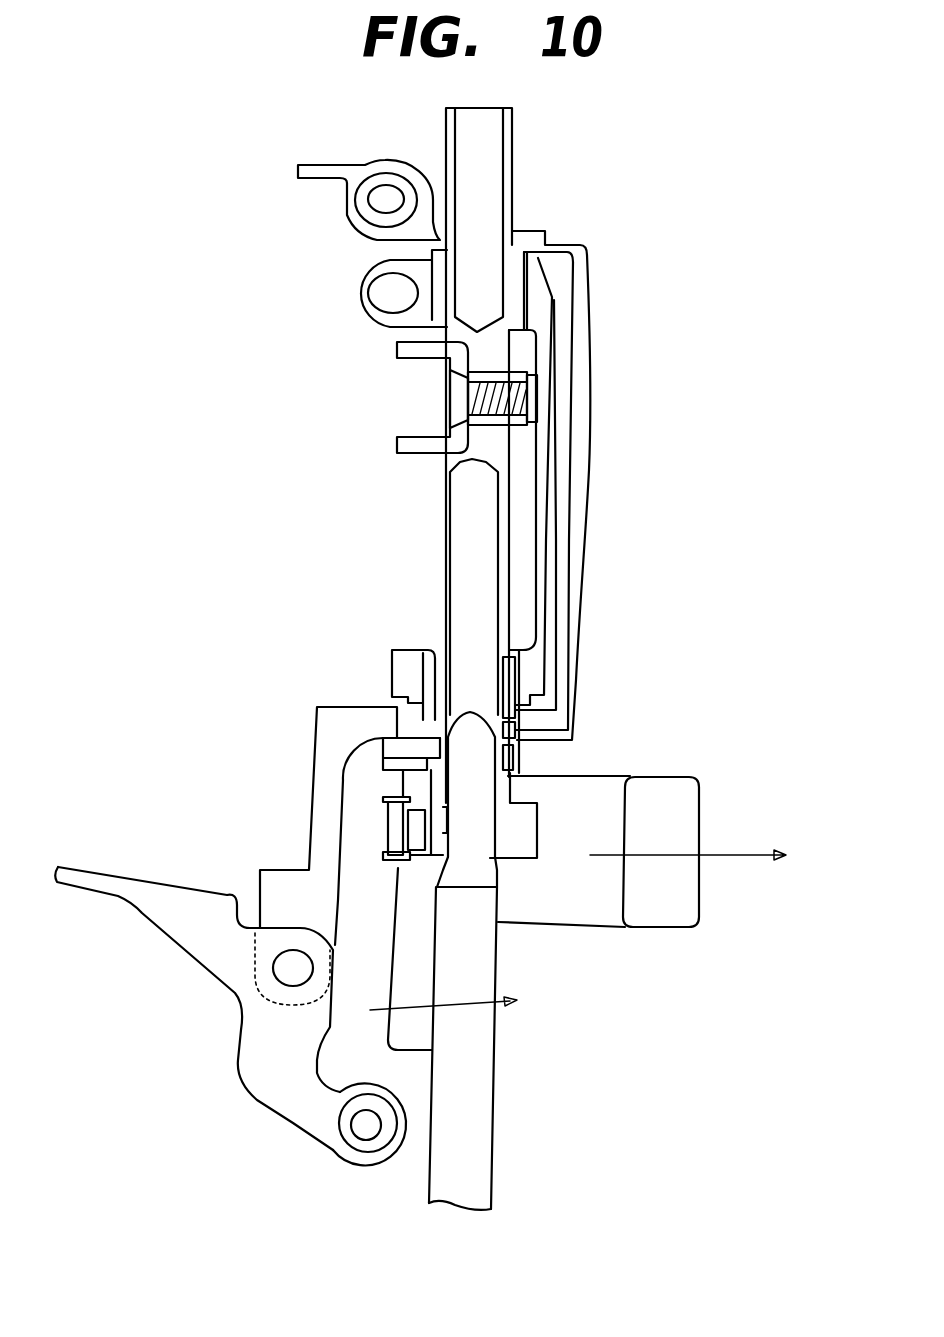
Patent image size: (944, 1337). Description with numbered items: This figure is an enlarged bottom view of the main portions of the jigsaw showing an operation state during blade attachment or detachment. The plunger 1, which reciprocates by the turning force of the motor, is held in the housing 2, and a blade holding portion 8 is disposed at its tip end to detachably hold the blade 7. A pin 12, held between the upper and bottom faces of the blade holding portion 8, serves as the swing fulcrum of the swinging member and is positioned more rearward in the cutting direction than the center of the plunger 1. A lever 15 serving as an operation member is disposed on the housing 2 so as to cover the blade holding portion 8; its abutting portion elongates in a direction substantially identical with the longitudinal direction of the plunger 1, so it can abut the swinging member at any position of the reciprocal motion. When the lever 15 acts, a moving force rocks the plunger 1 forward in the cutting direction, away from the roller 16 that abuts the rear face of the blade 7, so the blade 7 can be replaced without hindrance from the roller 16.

The plunger 1 is at (510, 157).
The housing 2 is at (581, 425).
The blade 7 is at (480, 1108).
The blade holding portion 8 is at (517, 823).
The pin 12 is at (400, 863).
The lever 15 is at (668, 795).
The roller 16 is at (368, 1160).